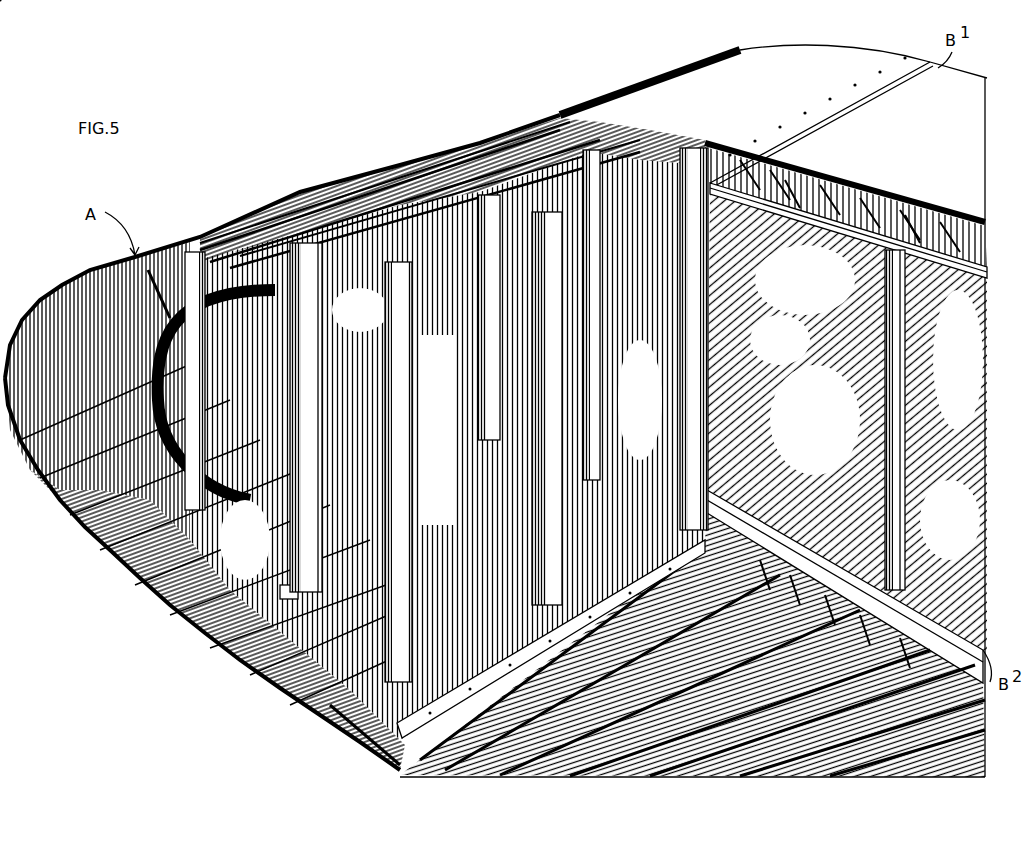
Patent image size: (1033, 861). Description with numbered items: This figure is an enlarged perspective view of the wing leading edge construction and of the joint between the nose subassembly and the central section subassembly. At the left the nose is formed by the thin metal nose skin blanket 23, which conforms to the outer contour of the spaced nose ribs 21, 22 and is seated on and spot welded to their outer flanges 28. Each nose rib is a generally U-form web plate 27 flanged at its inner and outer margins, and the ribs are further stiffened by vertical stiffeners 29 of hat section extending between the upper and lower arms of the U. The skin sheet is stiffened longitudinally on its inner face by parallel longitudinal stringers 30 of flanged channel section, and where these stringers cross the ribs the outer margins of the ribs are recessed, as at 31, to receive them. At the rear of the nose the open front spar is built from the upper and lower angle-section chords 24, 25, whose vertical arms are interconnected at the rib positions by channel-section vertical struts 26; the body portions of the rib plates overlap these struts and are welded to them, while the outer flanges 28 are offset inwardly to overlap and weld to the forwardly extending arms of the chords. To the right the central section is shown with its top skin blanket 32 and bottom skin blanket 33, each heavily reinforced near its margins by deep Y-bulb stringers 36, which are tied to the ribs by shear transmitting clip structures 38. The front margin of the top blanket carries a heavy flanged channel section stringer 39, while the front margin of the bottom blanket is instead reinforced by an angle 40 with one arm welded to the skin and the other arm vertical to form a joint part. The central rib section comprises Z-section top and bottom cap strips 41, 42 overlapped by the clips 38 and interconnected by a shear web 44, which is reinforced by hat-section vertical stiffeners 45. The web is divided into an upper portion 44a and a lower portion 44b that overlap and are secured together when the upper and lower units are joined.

The nose rib 21 is at (233, 230).
The nose rib 22 is at (410, 442).
The nose skin blanket 23 is at (567, 116).
The upper angle-section chord 24 is at (705, 158).
The lower angle-section chord 25 is at (345, 724).
The vertical strut 26 is at (622, 504).
The web plate 27 is at (273, 222).
The outer flange 28 is at (238, 232).
The vertical stiffener 29 is at (215, 295).
The longitudinal stringer 30 is at (113, 500).
The recess 31 is at (290, 585).
The top skin blanket 32 is at (954, 181).
The bottom skin blanket 33 is at (400, 772).
The stringer 36 is at (830, 178).
The clip structure 38 is at (880, 195).
The flanged channel section stringer 39 is at (752, 170).
The angle 40 is at (372, 745).
The top cap strip 41 is at (880, 248).
The bottom cap strip 42 is at (905, 624).
The shear web 44 is at (828, 391).
The upper portion of shear web 44a is at (834, 478).
The lower portion of shear web 44b is at (876, 581).
The vertical stiffener 45 is at (905, 445).